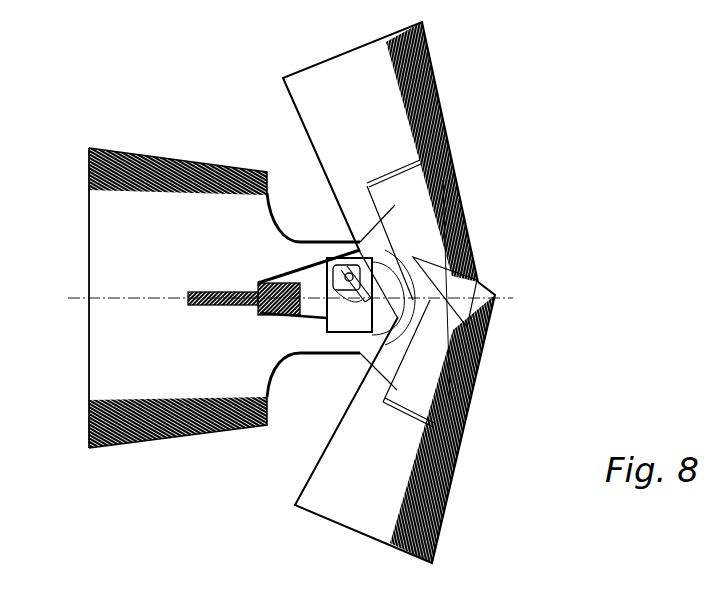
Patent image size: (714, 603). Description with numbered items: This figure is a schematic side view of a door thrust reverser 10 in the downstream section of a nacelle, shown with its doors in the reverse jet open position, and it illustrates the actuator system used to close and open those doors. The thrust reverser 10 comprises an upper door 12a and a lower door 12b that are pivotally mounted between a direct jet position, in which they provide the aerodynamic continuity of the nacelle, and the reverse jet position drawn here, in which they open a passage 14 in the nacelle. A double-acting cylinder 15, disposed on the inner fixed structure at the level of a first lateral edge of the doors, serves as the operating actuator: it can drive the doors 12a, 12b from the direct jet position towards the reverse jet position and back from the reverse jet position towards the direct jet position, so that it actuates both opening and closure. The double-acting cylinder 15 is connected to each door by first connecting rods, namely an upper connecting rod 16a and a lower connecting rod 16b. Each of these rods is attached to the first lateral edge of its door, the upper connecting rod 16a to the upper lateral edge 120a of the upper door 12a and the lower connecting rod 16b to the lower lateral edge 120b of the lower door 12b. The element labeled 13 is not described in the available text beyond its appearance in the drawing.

The thrust reverser 10 is at (143, 77).
The fuselage 13 is at (120, 222).
The double-acting cylinder 15 is at (215, 290).
The passage 14 is at (314, 230).
The upper connecting rod 16a is at (290, 268).
The lower connecting rod 16b is at (288, 335).
The upper lateral edge 120a is at (283, 80).
The lower lateral edge 120b is at (315, 460).
The upper door 12a is at (455, 172).
The lower door 12b is at (462, 432).